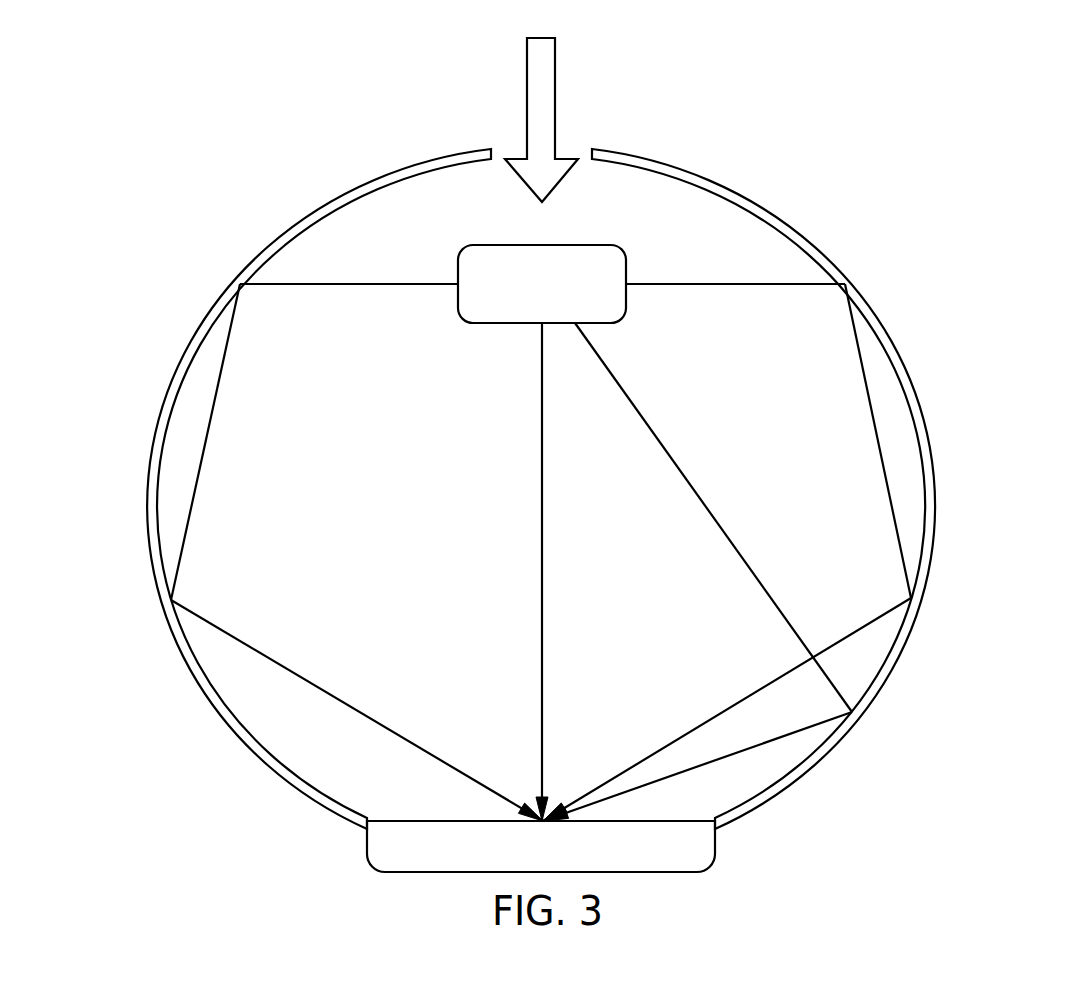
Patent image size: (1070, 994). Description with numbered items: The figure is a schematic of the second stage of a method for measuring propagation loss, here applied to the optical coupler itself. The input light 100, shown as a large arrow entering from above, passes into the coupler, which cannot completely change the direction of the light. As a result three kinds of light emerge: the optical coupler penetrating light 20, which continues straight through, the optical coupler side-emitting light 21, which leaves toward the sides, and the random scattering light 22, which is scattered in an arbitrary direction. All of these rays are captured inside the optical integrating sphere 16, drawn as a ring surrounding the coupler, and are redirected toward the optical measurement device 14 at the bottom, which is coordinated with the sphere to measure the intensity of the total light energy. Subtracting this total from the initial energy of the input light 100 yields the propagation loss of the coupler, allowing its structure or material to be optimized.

The input light 100 is at (547, 78).
The optical integrating sphere 16 is at (708, 178).
The optical coupler side-emitting light 21 is at (397, 283).
The random scattering light 22 is at (717, 515).
The optical coupler penetrating light 20 is at (542, 618).
The optical measurement device 14 is at (715, 848).